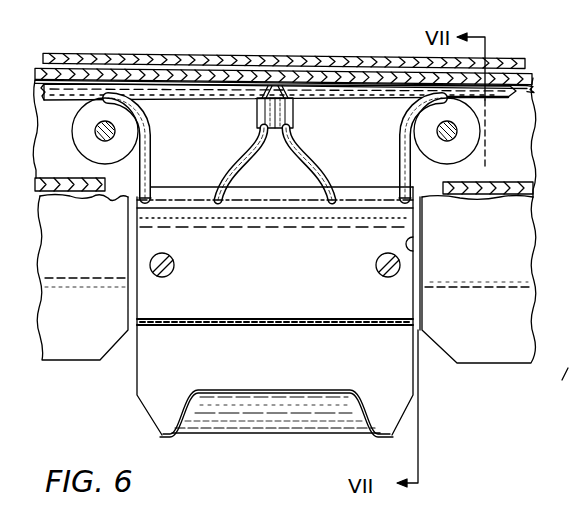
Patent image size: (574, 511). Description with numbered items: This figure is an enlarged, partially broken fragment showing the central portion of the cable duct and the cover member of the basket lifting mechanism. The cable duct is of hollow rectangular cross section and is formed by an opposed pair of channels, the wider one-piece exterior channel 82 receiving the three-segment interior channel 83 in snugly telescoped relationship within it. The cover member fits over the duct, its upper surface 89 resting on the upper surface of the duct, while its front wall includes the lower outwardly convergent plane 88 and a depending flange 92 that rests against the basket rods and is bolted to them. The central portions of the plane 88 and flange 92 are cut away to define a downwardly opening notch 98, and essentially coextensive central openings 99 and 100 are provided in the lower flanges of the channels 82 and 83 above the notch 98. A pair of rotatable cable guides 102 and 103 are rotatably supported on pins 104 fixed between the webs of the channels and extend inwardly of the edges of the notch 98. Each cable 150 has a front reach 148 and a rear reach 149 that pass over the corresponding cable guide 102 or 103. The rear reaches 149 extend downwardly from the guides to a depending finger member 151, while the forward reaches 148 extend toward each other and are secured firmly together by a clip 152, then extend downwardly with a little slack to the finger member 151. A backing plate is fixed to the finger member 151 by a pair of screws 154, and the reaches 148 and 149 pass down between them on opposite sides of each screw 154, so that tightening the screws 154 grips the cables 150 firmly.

The exterior channel 82 is at (537, 195).
The interior channel 83 is at (536, 173).
The lower outwardly convergent plane 88 is at (516, 242).
The upper surface 89 is at (497, 58).
The depending flange 92 is at (518, 338).
The notch 98 is at (418, 246).
The central opening 99 is at (98, 167).
The central opening 100 is at (111, 200).
The rotatable cable guide 102 is at (82, 120).
The rotatable cable guide 103 is at (468, 135).
The pin 104 is at (456, 127).
The front reach 148 is at (376, 97).
The rear reach 149 is at (400, 158).
The cable 150 is at (304, 152).
The finger member 151 is at (291, 449).
The clip 152 is at (258, 113).
The screw 154 is at (175, 266).